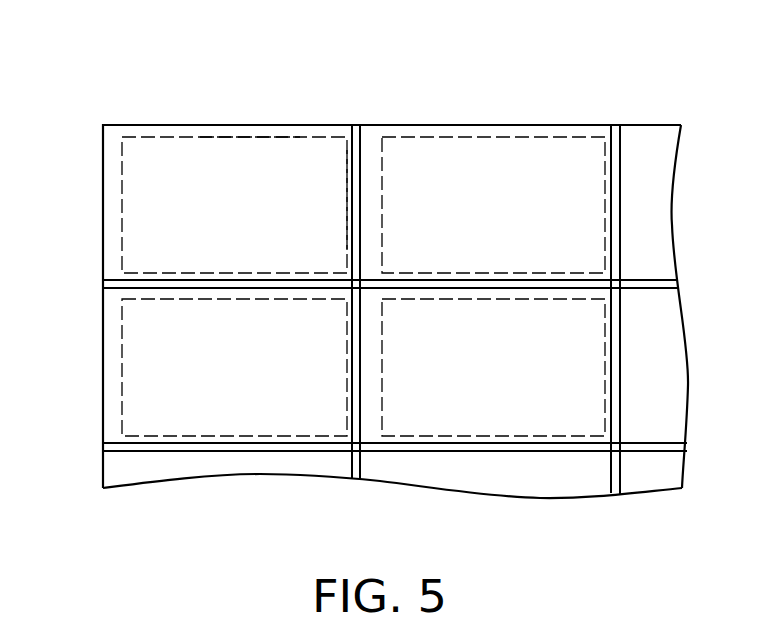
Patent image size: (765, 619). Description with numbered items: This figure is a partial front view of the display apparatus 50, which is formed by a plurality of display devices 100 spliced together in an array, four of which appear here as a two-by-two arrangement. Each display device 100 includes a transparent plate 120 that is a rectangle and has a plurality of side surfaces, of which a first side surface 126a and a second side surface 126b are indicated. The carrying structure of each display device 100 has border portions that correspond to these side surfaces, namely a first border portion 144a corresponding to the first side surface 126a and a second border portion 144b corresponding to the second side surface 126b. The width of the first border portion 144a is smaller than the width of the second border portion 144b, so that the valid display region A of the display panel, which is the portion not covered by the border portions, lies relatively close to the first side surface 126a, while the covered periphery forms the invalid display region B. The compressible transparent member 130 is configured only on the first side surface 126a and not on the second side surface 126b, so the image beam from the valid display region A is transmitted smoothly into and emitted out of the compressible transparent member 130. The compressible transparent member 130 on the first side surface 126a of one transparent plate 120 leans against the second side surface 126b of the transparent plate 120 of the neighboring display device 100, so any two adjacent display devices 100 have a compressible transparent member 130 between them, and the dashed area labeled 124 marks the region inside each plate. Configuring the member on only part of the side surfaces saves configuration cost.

The display device 100 is at (358, 255).
The transparent plate 120 is at (138, 249).
The pixel region 124 is at (215, 223).
The first side surface 126a is at (323, 281).
The second side surface 126b is at (102, 170).
The compressible transparent member 130 is at (355, 182).
The first border portion 144a is at (348, 164).
The second border portion 144b is at (295, 133).
The display apparatus 50 is at (686, 541).
The valid display region A is at (268, 222).
The invalid display region B is at (108, 190).